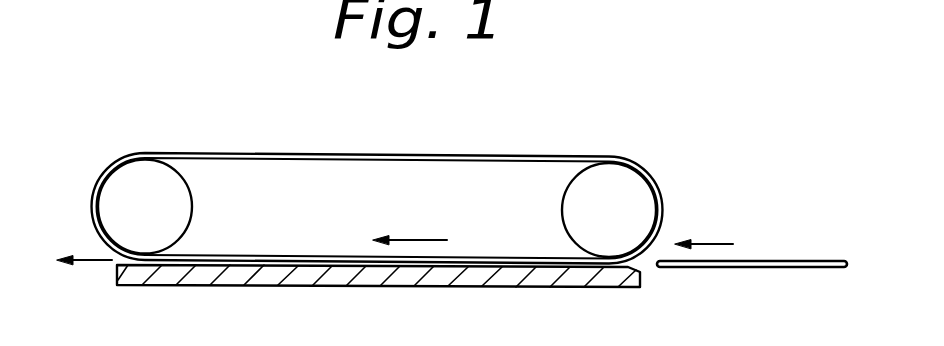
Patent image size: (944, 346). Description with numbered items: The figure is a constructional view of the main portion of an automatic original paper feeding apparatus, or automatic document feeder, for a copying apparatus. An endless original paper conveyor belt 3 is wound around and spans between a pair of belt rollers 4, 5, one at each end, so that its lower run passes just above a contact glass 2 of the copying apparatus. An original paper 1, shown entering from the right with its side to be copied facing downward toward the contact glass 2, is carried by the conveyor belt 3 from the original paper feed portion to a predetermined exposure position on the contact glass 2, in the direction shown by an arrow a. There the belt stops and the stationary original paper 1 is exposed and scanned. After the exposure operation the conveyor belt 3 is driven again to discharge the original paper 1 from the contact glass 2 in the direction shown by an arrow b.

The original paper 1 is at (773, 268).
The contact glass 2 is at (382, 278).
The original paper conveyor belt 3 is at (285, 257).
The belt roller 4 is at (180, 207).
The belt roller 5 is at (572, 200).
The arrow a is at (420, 239).
The arrow b is at (88, 262).